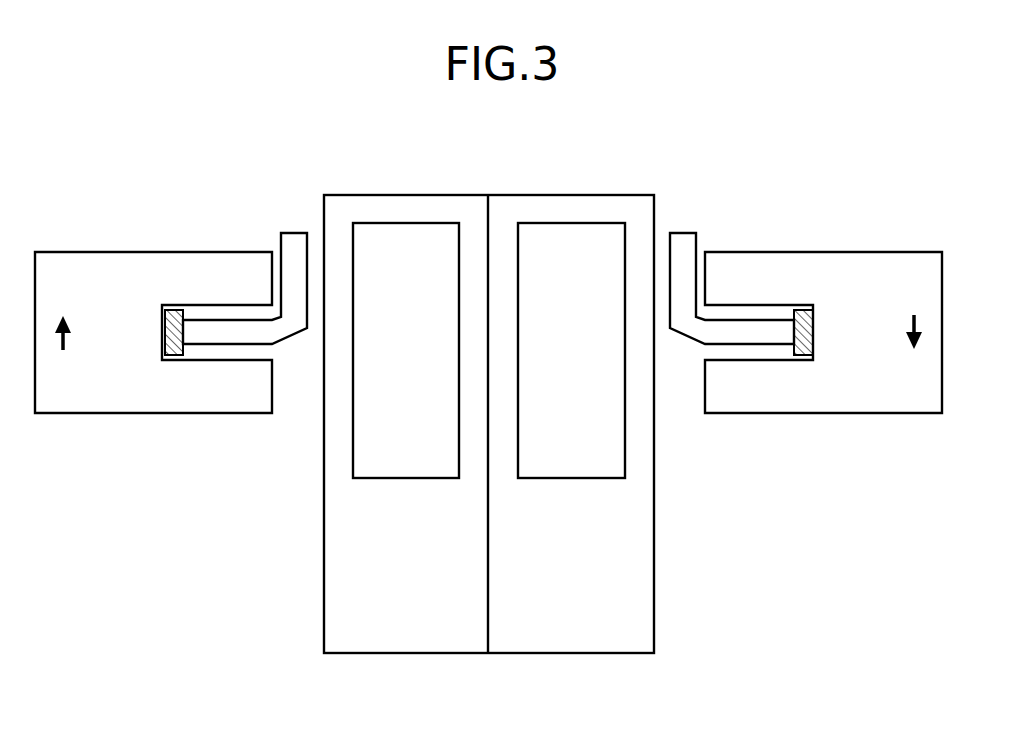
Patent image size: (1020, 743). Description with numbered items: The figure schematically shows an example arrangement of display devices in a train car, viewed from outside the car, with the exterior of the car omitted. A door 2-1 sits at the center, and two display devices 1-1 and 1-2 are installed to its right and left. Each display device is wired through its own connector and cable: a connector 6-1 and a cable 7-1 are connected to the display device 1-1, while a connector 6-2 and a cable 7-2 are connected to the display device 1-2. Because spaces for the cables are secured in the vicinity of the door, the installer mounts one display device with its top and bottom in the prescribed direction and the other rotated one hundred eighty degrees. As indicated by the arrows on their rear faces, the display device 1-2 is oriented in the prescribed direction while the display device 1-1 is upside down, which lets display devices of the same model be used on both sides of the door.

The display device 1-1 is at (898, 252).
The display device 1-2 is at (76, 252).
The door 2-1 is at (488, 195).
The connector 6-1 is at (803, 355).
The connector 6-2 is at (173, 355).
The cable 7-1 is at (691, 332).
The cable 7-2 is at (286, 332).